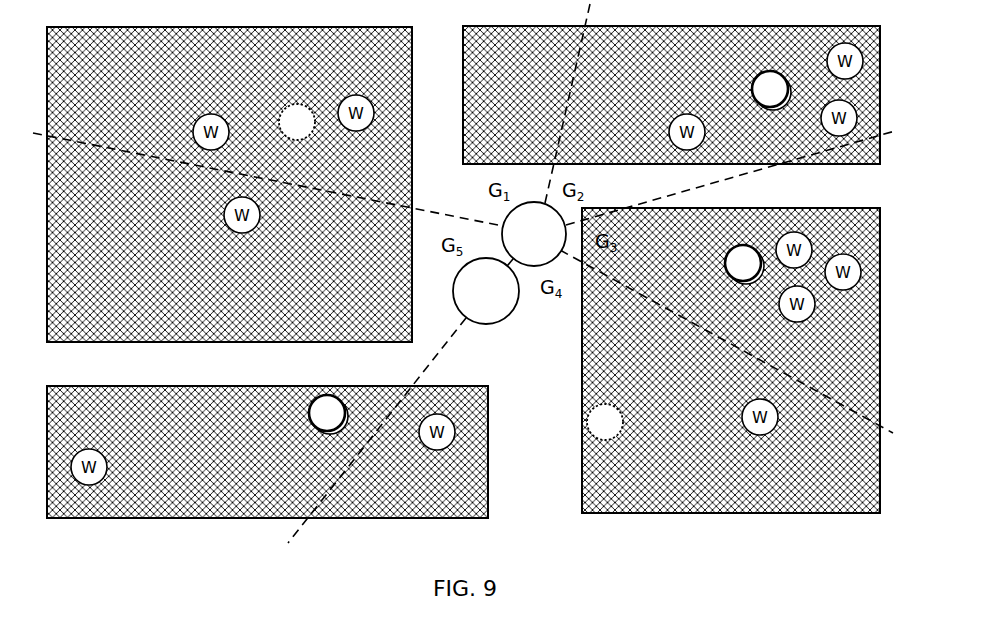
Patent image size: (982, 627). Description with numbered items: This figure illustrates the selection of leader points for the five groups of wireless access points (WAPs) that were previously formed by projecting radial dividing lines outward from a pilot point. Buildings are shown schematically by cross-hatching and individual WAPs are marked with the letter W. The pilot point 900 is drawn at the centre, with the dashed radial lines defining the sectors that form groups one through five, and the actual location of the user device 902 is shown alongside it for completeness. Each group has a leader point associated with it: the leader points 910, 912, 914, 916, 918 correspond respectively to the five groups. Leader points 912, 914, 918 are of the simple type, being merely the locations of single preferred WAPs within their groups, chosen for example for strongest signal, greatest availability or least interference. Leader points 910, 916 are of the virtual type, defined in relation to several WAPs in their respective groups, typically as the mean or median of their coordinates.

The pilot point 900 is at (534, 234).
The user device 902 is at (486, 291).
The leader point 910 is at (297, 122).
The leader point 912 is at (771, 90).
The leader point 914 is at (744, 264).
The leader point 916 is at (605, 422).
The leader point 918 is at (328, 414).